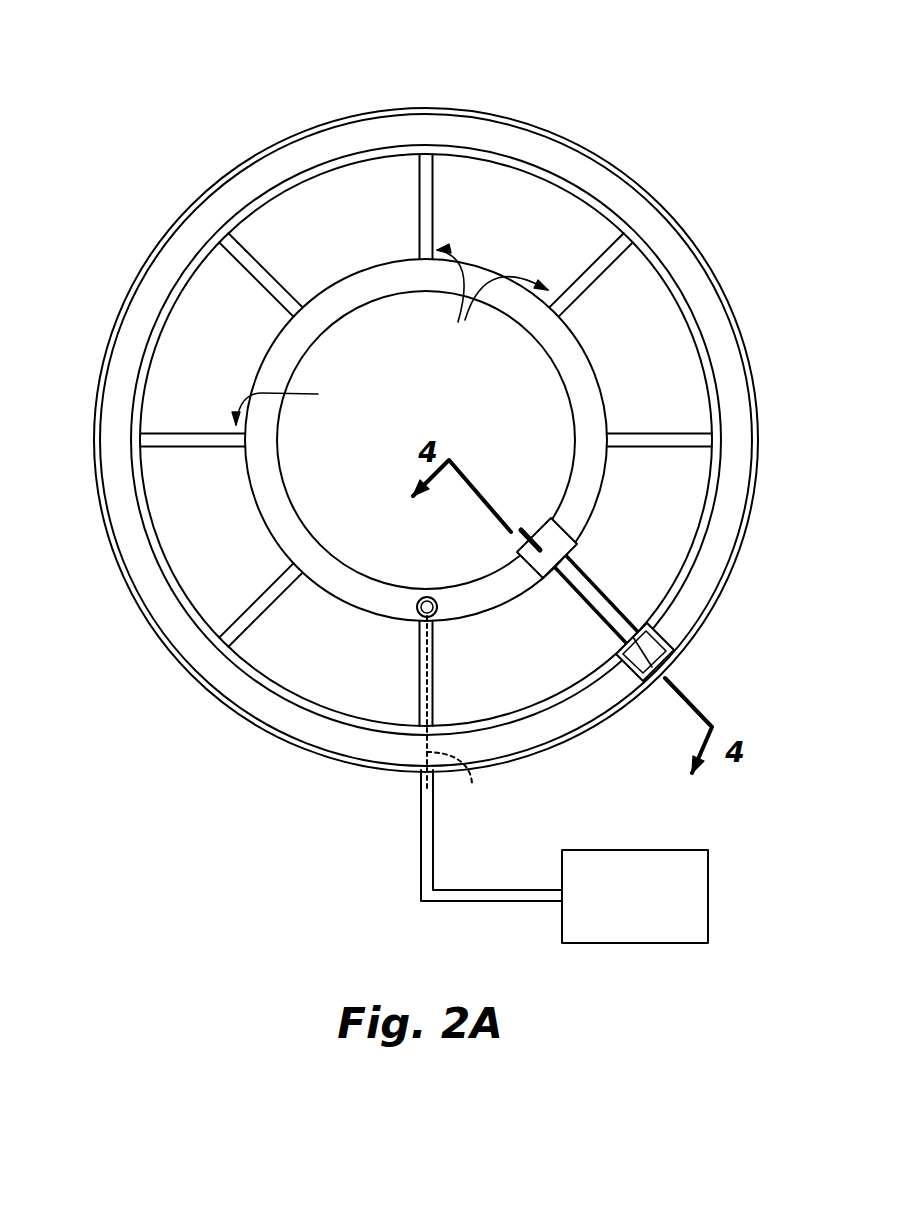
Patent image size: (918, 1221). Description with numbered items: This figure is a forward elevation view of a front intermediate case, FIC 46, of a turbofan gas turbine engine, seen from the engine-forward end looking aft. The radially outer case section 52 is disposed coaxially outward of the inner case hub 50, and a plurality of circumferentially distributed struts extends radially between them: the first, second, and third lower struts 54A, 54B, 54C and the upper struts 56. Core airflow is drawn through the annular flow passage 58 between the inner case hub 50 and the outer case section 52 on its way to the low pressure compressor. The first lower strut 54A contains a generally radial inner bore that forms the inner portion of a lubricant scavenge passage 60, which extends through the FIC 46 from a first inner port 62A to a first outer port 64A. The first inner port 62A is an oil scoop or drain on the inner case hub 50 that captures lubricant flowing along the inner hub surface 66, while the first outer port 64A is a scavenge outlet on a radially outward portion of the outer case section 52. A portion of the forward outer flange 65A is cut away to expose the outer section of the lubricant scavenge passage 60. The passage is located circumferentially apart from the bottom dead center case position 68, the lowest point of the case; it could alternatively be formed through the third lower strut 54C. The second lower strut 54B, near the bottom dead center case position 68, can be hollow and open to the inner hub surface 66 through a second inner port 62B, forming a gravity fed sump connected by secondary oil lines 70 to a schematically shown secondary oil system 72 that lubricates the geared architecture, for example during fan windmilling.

The FIC 46 is at (763, 120).
The inner case hub 50 is at (383, 320).
The outer case section 52 is at (593, 140).
The first lower strut 54A is at (605, 590).
The second lower strut 54B is at (437, 667).
The third lower strut 54C is at (250, 598).
The upper struts 56 is at (390, 334).
The annular flow passage 58 is at (336, 247).
The lubricant scavenge passage 60 is at (510, 532).
The first inner port 62A is at (514, 522).
The second inner port 62B is at (416, 605).
The first outer port 64A is at (703, 657).
The forward outer flange 65A is at (193, 668).
The inner hub surface 66 is at (580, 460).
The bottom dead center case position 68 is at (455, 784).
The secondary oil lines 70 is at (467, 903).
The secondary oil system 72 is at (710, 892).